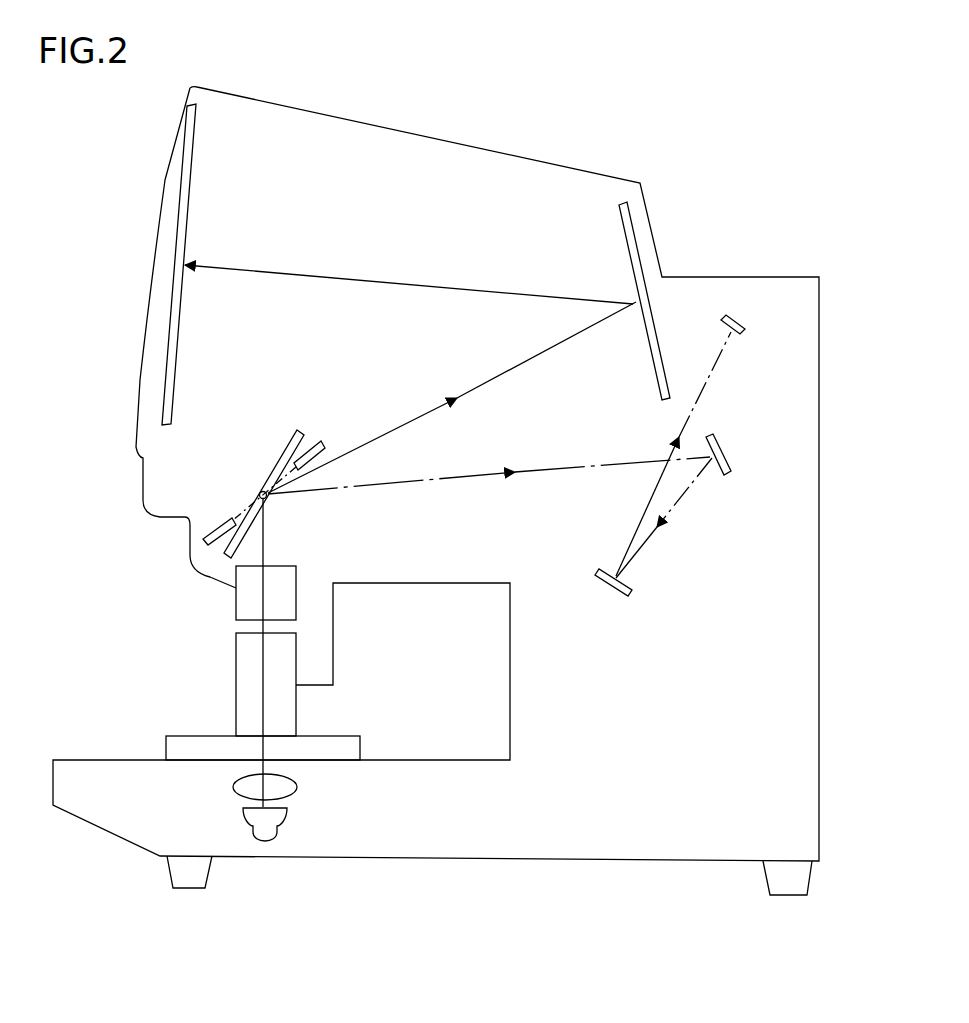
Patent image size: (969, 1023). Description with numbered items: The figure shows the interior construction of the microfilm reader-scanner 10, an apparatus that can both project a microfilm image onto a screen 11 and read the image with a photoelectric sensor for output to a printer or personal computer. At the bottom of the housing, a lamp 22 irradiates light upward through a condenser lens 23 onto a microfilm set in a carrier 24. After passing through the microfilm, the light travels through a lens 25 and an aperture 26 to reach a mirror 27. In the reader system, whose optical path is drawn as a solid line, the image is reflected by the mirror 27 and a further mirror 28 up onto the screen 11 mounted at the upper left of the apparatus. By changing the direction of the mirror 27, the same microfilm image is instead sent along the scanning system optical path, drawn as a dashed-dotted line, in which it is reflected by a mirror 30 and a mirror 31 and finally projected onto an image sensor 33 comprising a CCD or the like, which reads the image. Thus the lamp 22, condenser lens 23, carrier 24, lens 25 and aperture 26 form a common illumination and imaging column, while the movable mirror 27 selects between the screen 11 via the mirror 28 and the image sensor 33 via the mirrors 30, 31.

The microfilm reader-scanner 10 is at (712, 291).
The screen 11 is at (178, 192).
The lamp 22 is at (270, 833).
The condenser lens 23 is at (290, 787).
The carrier 24 is at (220, 740).
The lens 25 is at (246, 655).
The aperture 26 is at (248, 592).
The mirror 27 is at (300, 440).
The mirror 28 is at (632, 216).
The mirror 30 is at (729, 465).
The mirror 31 is at (617, 592).
The image sensor 33 is at (742, 328).